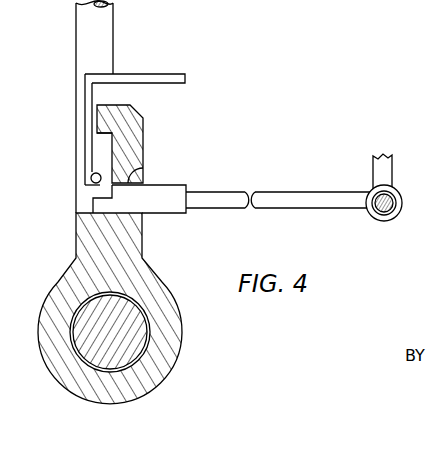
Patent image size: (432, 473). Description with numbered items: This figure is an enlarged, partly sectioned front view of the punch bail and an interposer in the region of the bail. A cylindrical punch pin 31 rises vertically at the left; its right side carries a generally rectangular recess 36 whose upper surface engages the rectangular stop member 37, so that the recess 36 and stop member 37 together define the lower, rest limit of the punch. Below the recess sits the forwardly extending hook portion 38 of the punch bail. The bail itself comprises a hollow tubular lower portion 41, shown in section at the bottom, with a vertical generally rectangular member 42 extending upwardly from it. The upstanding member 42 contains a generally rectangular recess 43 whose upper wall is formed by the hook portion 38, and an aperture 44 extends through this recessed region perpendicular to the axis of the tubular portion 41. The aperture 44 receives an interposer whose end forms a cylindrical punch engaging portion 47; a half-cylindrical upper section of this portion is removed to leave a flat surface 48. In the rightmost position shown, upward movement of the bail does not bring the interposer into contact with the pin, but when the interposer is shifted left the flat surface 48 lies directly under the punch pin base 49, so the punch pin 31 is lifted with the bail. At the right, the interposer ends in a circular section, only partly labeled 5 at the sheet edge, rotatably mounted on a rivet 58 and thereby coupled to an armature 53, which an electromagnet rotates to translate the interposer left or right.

The punch pin 31 is at (104, 14).
The rectangular recess 36 is at (93, 94).
The stop member 37 is at (178, 77).
The hook portion 38 is at (97, 112).
The hollow tubular lower portion 41 is at (153, 292).
The vertical rectangular member 42 is at (143, 143).
The rectangular recess 43 is at (100, 145).
The aperture 44 is at (137, 176).
The cylindrical punch engaging portion 47 is at (177, 192).
The flat surface 48 is at (100, 192).
The punch pin base 49 is at (93, 173).
The armature 53 is at (380, 168).
The boss 5 is at (402, 193).
The rivet 58 is at (389, 207).